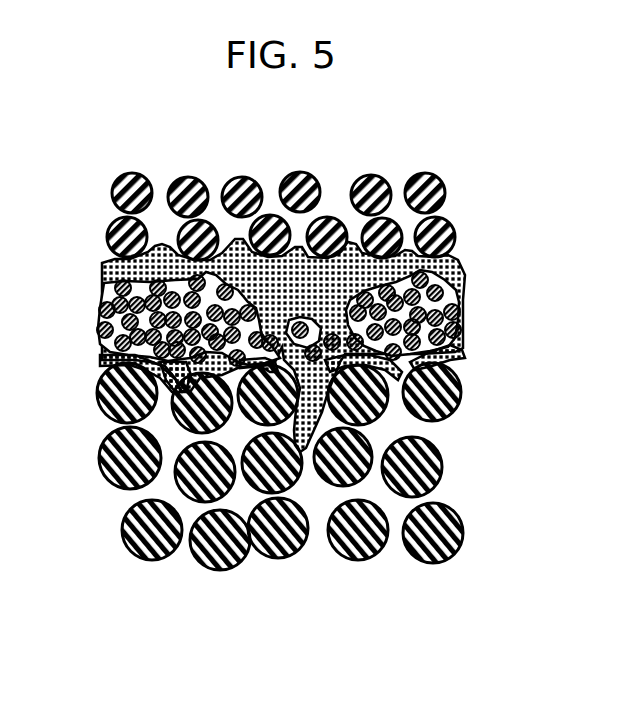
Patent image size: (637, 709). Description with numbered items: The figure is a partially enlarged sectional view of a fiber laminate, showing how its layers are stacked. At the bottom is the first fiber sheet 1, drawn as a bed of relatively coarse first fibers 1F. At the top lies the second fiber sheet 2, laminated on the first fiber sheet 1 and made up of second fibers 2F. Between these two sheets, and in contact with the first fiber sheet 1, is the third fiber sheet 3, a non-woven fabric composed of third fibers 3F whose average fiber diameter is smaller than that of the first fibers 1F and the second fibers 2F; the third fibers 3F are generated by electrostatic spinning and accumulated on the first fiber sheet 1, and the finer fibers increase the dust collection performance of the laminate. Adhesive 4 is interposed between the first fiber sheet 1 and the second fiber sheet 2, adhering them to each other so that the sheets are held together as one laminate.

The first fiber sheet 1 is at (294, 473).
The first fibers 1F is at (128, 538).
The second fiber sheet 2 is at (298, 189).
The second fibers 2F is at (120, 188).
The third fiber sheet 3 is at (282, 345).
The third fibers 3F is at (100, 319).
The adhesive 4 is at (105, 377).